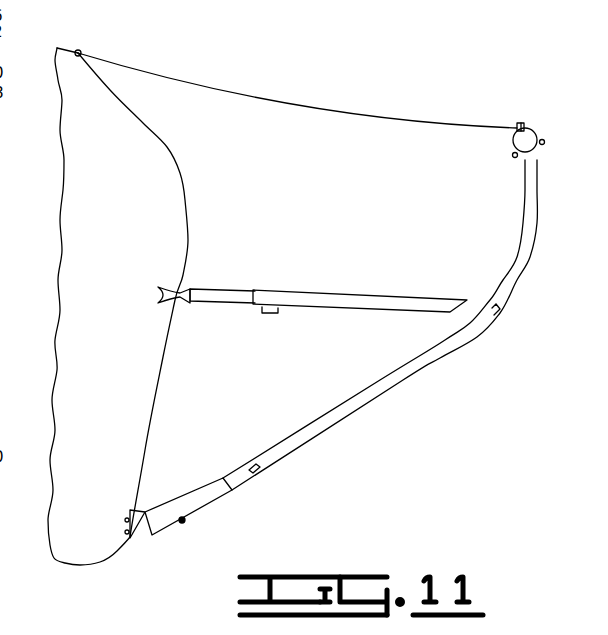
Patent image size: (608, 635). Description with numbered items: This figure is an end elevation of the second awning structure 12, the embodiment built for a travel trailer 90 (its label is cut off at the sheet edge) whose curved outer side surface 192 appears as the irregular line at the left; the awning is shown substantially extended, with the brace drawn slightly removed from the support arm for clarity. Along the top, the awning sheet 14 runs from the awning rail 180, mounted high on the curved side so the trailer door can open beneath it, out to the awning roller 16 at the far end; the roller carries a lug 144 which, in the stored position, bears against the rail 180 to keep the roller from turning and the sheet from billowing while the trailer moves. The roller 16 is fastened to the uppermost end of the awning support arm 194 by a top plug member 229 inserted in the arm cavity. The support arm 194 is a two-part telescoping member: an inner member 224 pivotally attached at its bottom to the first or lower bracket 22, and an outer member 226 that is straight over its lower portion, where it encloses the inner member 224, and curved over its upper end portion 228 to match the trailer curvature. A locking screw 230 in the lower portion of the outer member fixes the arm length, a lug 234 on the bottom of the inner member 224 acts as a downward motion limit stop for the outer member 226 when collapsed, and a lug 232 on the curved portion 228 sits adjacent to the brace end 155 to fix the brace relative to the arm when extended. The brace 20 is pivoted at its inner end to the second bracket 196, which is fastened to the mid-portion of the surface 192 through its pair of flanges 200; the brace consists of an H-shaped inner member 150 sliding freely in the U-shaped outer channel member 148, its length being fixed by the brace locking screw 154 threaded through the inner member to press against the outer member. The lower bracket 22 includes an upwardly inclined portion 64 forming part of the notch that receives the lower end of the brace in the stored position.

The awning structure 12 is at (432, 54).
The awning sheet 14 is at (300, 103).
The awning roller 16 is at (532, 127).
The brace 20 is at (292, 294).
The first bracket 22 is at (134, 555).
The upwardly inclined portion 64 is at (143, 512).
The sail fabric panel 90 is at (46, 270).
The lug 144 is at (545, 143).
The brace outer member 148 is at (360, 296).
The brace inner member 150 is at (228, 291).
The brace locking screw 154 is at (266, 313).
The brace end 155 is at (463, 305).
The awning rail 180 is at (75, 50).
The curved outer side surface 192 is at (188, 183).
The awning support arm 194 is at (363, 362).
The second bracket 196 is at (199, 275).
The flanges 200 is at (160, 293).
The support arm inner member 224 is at (207, 499).
The support arm outer member 226 is at (347, 418).
The upper curved end portion 228 is at (535, 212).
The top plug member 229 is at (536, 90).
The locking screw 230 is at (259, 470).
The lug 232 is at (506, 300).
The lug 234 is at (183, 523).